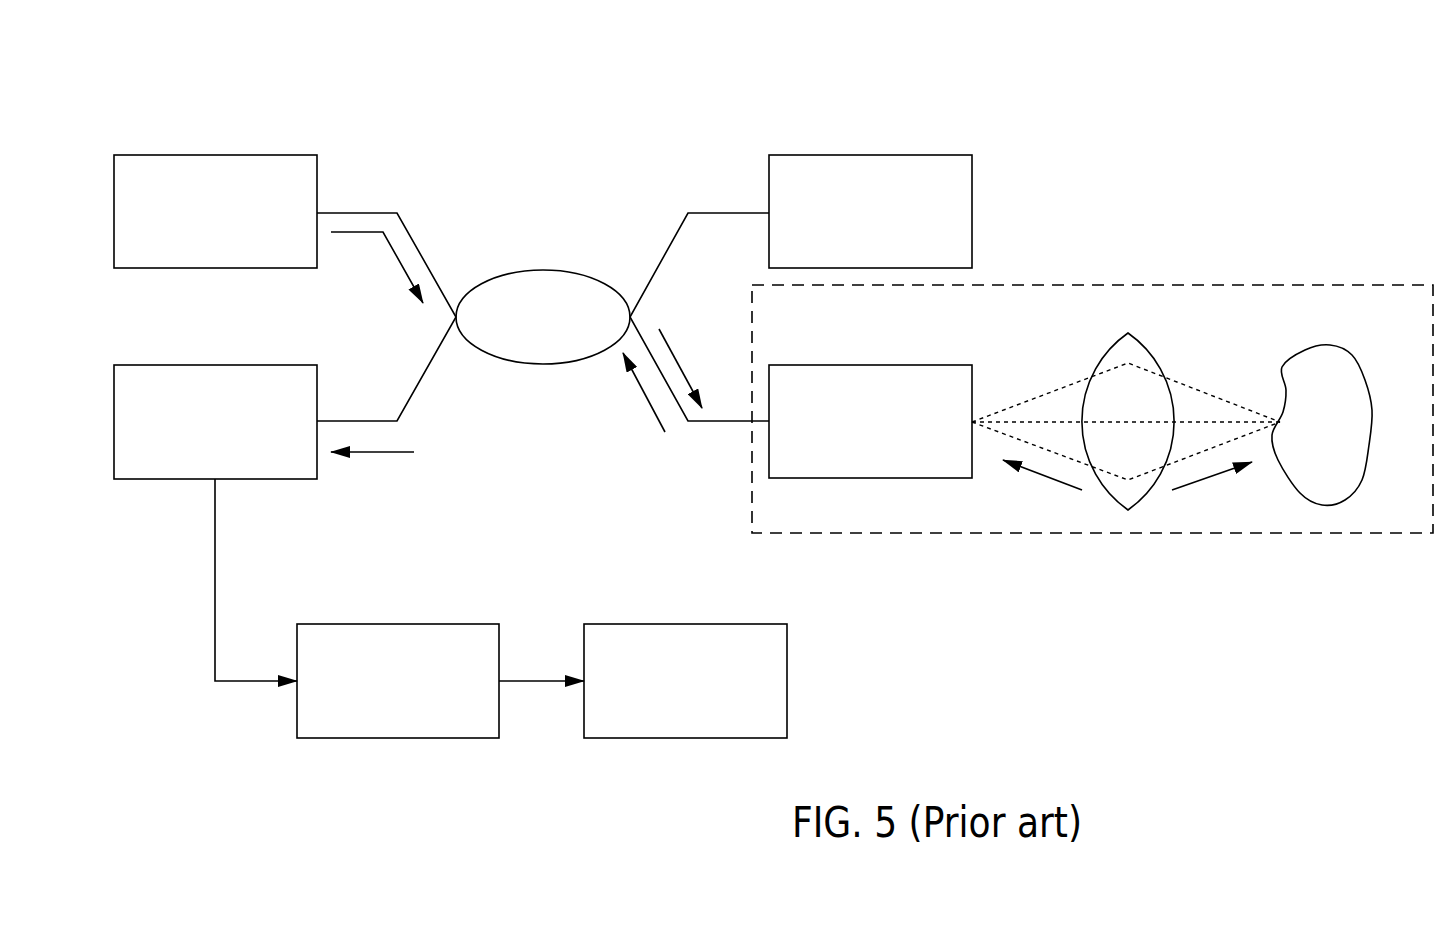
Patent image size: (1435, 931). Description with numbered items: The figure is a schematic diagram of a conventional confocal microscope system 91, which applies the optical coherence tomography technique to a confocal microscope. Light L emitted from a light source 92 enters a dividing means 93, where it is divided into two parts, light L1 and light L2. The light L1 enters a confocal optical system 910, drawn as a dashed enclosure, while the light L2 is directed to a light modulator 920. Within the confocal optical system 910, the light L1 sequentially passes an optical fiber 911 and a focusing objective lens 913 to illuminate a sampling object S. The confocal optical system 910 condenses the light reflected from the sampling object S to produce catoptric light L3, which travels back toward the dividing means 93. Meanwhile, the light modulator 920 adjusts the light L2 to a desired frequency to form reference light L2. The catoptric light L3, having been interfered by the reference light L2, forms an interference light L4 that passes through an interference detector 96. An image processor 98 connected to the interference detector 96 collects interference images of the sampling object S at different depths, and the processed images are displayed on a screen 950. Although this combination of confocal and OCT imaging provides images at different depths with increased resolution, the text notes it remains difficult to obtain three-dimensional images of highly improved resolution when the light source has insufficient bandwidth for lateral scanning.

The confocal microscope system 91 is at (1109, 185).
The light source 92 is at (257, 155).
The dividing means 93 is at (543, 270).
The interference detector 96 is at (257, 365).
The image processor 98 is at (440, 624).
The screen 950 is at (727, 624).
The light modulator 920 is at (912, 155).
The confocal optical system 910 is at (1271, 285).
The optical fiber 911 is at (912, 365).
The focusing objective lens 913 is at (1160, 365).
The sampling object S is at (1355, 367).
The light L is at (395, 237).
The light L1 is at (670, 347).
The reference light L2 is at (663, 250).
The catoptric light L3 is at (645, 397).
The interference light L4 is at (388, 452).